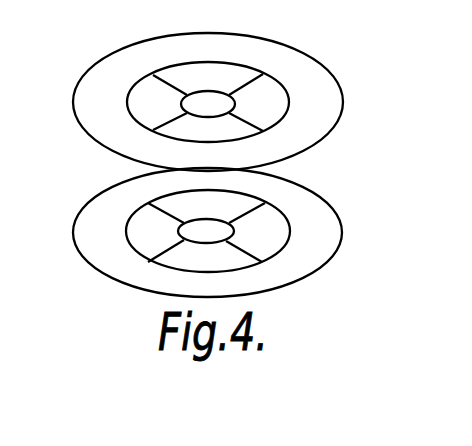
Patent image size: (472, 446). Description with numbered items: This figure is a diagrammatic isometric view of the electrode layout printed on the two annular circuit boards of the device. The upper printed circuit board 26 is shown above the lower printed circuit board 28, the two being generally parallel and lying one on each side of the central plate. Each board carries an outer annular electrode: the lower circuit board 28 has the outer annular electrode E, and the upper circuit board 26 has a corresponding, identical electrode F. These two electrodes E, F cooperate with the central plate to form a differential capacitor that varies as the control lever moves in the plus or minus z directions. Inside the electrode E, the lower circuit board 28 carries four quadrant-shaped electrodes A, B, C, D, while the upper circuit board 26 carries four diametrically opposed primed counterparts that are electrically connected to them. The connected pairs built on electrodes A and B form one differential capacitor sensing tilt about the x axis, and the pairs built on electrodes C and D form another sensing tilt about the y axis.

The upper printed circuit board 26 is at (201, 102).
The lower printed circuit board 28 is at (200, 233).
The outer annular electrode F is at (315, 90).
The outer annular electrode E is at (315, 215).
The quadrant-shaped electrode A is at (165, 232).
The quadrant-shaped electrode B is at (246, 232).
The quadrant-shaped electrode C is at (206, 207).
The quadrant-shaped electrode D is at (205, 256).